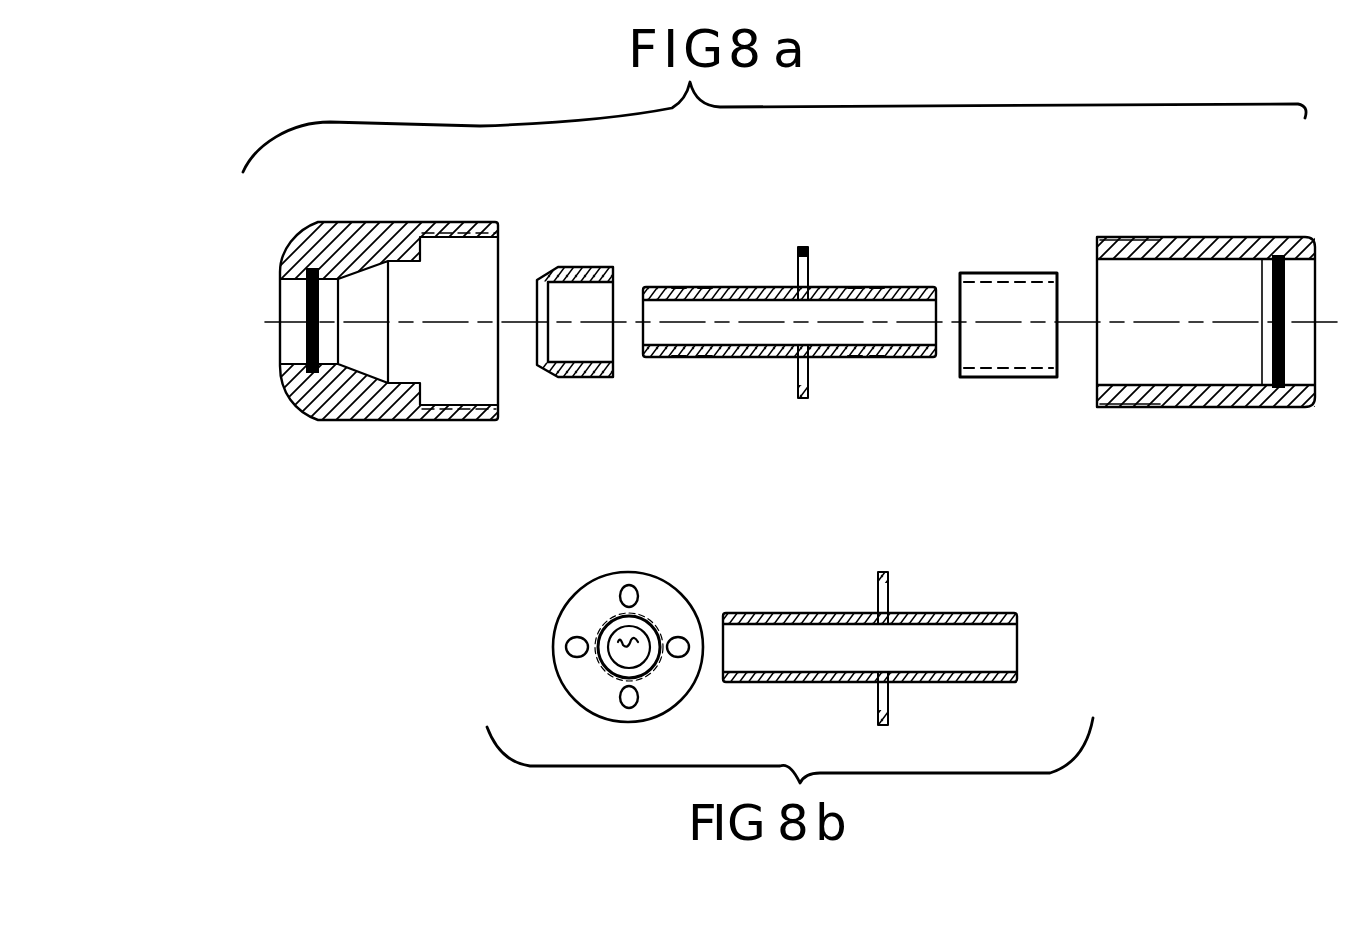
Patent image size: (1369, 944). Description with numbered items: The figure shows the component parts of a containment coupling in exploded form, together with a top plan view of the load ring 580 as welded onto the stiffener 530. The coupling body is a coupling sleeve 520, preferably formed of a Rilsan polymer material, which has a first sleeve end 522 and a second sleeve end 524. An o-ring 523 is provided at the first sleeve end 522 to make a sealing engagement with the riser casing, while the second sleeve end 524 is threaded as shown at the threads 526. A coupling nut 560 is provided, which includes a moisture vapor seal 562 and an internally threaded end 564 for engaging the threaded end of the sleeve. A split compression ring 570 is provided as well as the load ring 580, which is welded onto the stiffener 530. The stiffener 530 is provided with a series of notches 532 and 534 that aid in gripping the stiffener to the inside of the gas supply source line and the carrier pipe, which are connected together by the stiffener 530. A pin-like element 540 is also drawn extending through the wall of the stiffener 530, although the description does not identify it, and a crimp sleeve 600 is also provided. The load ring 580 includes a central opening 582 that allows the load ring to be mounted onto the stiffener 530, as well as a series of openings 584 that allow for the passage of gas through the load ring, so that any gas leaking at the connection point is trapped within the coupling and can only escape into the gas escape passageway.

In FIG. 8a, the coupling nut 560 is at (356, 224).
In FIG. 8a, the moisture vapor seal 562 is at (307, 342).
In FIG. 8a, the internally threaded end 564 is at (456, 404).
In FIG. 8a, the split compression ring 570 is at (582, 267).
In FIG. 8a, the stiffener 530 is at (748, 287).
In FIG. 8b, the stiffener 530 is at (955, 612).
In FIG. 8a, the notches 532 is at (706, 362).
In FIG. 8a, the notches 534 is at (853, 359).
In FIG. 8a, the pin 540 is at (806, 247).
In FIG. 8b, the pin 540 is at (880, 571).
In FIG. 8a, the crimp sleeve 600 is at (1000, 273).
In FIG. 8a, the coupling sleeve 520 is at (1215, 408).
In FIG. 8a, the first sleeve end 522 is at (1300, 240).
In FIG. 8a, the o-ring 523 is at (1270, 277).
In FIG. 8a, the second sleeve end 524 is at (1110, 237).
In FIG. 8a, the threads 526 is at (1138, 408).
In FIG. 8b, the load ring 580 is at (582, 602).
In FIG. 8b, the central opening 582 is at (645, 643).
In FIG. 8b, the openings 584 is at (624, 596).